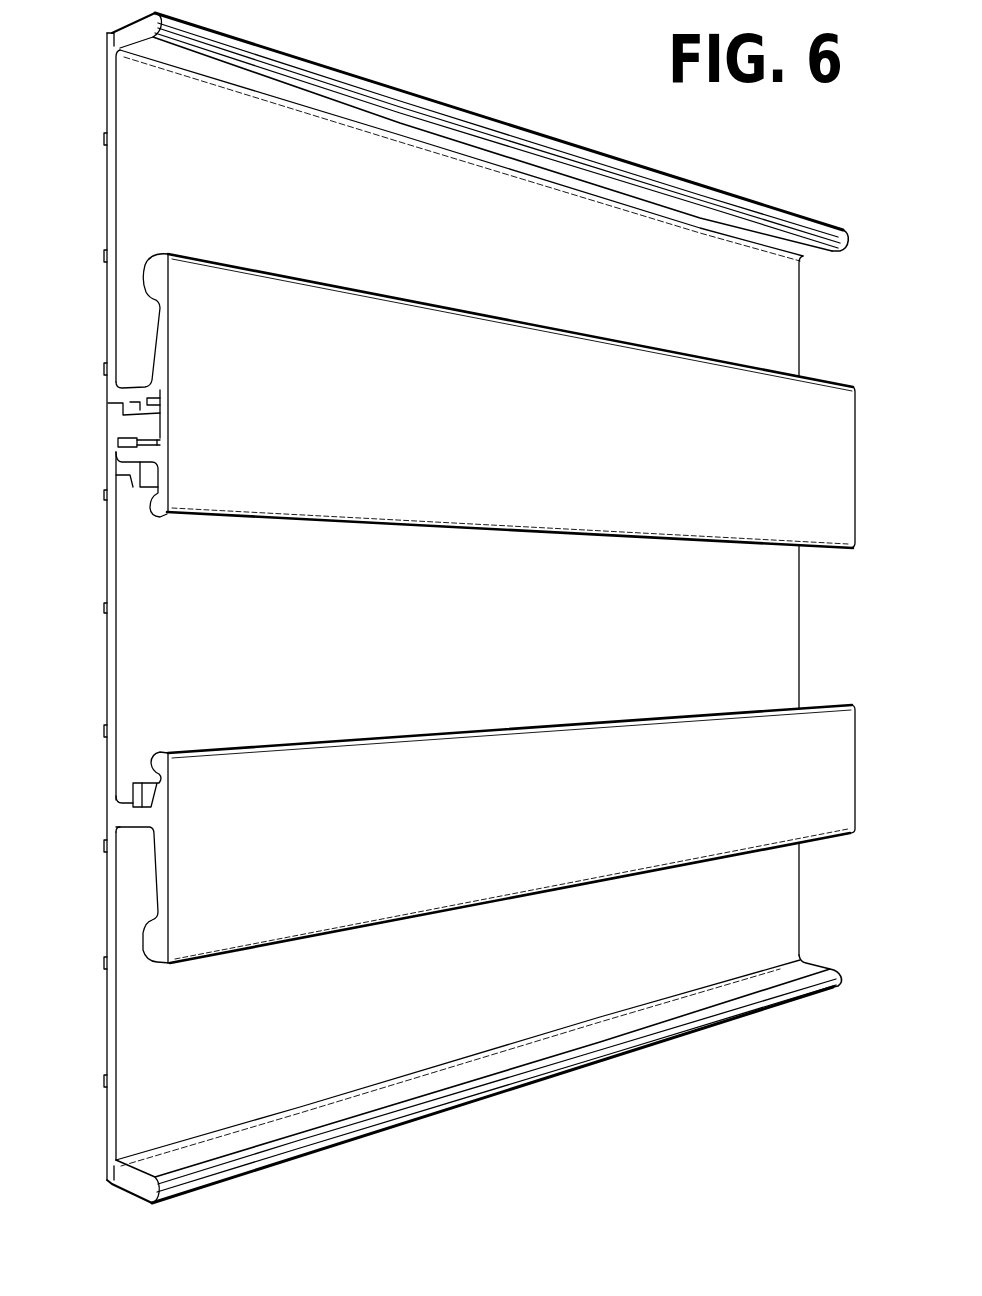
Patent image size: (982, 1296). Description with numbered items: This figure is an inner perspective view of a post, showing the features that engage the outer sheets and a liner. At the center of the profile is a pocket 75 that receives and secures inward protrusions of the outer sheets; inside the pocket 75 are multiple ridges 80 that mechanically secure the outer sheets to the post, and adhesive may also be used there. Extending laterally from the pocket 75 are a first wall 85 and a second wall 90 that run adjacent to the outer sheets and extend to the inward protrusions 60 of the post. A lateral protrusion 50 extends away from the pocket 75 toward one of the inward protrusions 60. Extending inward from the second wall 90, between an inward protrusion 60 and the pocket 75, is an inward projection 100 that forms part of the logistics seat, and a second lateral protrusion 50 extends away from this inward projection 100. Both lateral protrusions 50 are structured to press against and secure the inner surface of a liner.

The lateral protrusion 50 is at (163, 275).
The inward protrusion 60 is at (470, 127).
The pocket 75 is at (150, 413).
The ridges 80 is at (118, 441).
The first wall 85 is at (511, 381).
The second wall 90 is at (511, 794).
The inward projection 100 is at (152, 820).